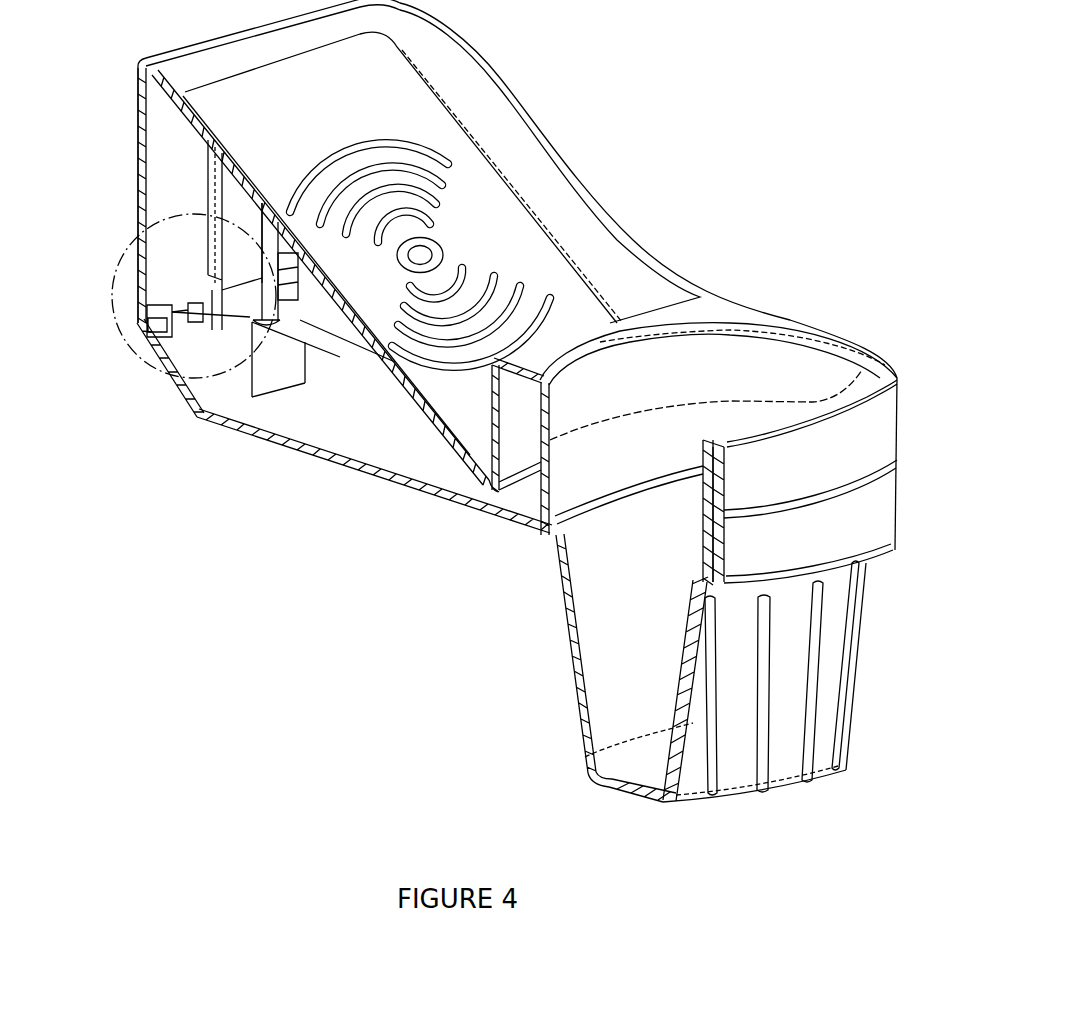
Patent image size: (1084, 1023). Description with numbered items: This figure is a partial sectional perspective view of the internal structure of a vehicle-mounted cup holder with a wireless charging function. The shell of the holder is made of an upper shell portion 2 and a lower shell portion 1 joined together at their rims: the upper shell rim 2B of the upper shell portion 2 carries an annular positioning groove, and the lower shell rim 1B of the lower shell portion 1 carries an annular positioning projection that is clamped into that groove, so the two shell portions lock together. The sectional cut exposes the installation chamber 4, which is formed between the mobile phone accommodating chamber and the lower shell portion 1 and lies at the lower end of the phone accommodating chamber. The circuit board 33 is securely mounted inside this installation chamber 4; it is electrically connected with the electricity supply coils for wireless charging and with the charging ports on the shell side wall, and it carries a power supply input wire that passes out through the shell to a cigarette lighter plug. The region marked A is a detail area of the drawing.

The lower shell portion 1 is at (323, 420).
The upper shell portion 2 is at (170, 200).
The installation chamber 4 is at (373, 398).
The circuit board 33 is at (313, 335).
The detail region A is at (118, 318).
The upper shell rim 2B is at (723, 510).
The lower shell rim 1B is at (725, 522).